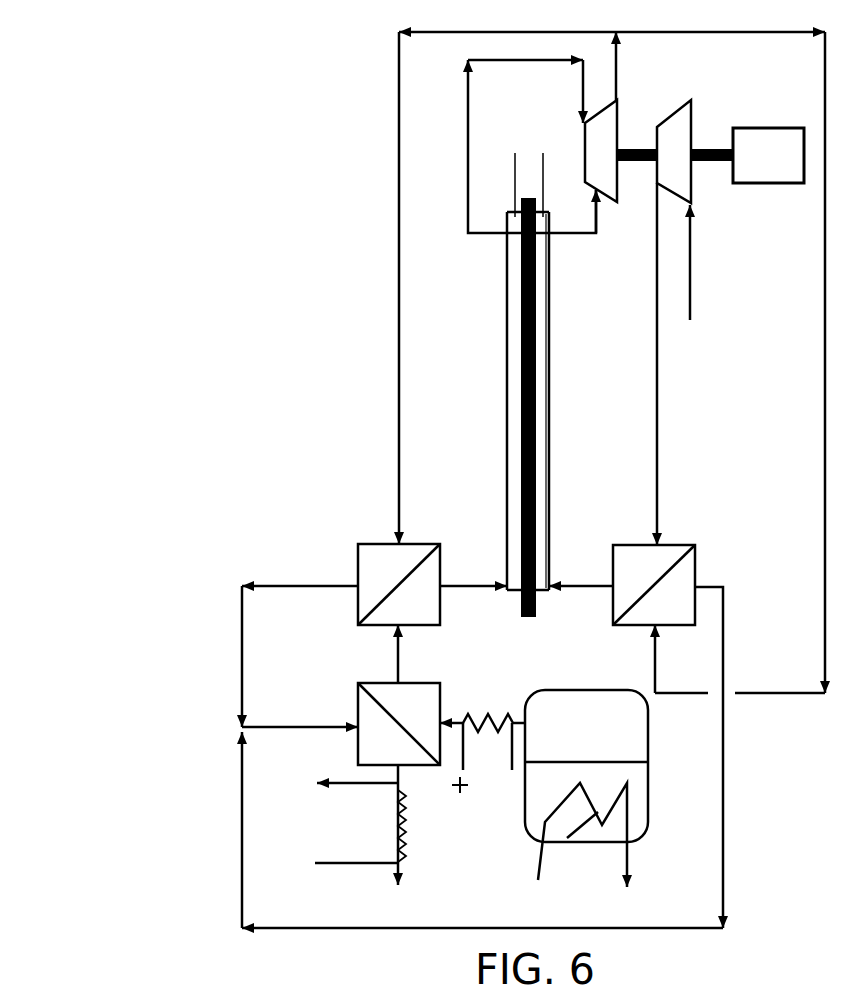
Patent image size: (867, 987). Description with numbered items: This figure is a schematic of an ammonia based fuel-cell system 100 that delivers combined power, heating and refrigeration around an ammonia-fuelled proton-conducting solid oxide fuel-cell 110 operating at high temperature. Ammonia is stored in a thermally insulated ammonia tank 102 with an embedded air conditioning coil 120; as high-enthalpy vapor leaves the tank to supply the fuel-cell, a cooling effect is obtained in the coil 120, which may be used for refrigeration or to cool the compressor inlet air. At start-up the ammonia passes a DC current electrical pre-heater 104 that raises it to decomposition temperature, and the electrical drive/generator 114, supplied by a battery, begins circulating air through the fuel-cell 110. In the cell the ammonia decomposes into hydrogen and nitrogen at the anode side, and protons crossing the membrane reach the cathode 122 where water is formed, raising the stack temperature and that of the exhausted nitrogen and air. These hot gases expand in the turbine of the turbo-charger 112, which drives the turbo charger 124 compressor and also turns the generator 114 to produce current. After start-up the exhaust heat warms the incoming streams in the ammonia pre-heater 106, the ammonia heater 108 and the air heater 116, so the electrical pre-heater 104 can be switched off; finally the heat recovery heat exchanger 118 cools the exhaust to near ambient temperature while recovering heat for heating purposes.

The ammonia based fuel-cell system 100 is at (165, 676).
The ammonia tank 102 is at (623, 733).
The DC current electrical pre-heater 104 is at (511, 709).
The ammonia pre-heater 106 is at (383, 685).
The ammonia heater 108 is at (379, 547).
The proton-conducting solid oxide fuel-cell 110 is at (500, 352).
The turbo-charger 112 is at (611, 199).
The electrical drive/generator 114 is at (779, 184).
The air heater 116 is at (677, 545).
The heat recovery heat exchanger 118 is at (404, 838).
The air conditioning coil 120 is at (565, 842).
The cathode 122 is at (553, 416).
The turbo charger 124 is at (671, 112).